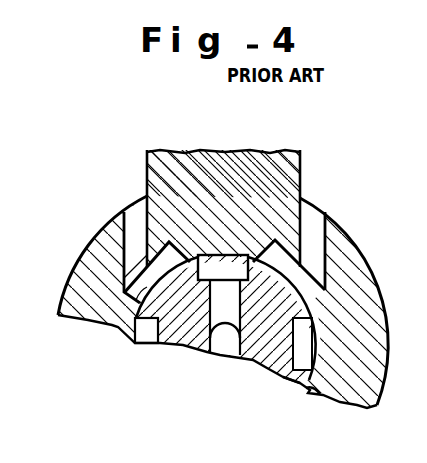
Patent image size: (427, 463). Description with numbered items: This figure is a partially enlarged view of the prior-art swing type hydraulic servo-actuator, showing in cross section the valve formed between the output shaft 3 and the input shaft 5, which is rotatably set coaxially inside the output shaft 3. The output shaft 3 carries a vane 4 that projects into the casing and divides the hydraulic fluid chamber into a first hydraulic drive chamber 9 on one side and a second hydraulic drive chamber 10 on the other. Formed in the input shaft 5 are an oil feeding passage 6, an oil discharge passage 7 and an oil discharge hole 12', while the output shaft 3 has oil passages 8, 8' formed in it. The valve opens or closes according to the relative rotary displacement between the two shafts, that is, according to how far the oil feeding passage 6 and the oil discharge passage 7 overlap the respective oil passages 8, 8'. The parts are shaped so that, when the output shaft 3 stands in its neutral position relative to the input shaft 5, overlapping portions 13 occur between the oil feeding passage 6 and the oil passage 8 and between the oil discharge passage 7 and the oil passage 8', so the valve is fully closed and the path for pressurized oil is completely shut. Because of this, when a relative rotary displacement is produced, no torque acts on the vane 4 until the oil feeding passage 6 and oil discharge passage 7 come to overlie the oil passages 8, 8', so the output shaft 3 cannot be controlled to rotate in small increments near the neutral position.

The output shaft 3 is at (95, 272).
The vane 4 is at (222, 157).
The input shaft 5 is at (183, 330).
The oil feeding passage 6 is at (303, 355).
The oil discharge passage 7 is at (228, 267).
The oil passage 8 is at (353, 251).
The oil passage 8' is at (120, 290).
The first hydraulic drive chamber 9 is at (390, 178).
The second hydraulic drive chamber 10 is at (90, 179).
The oil discharge hole 12' is at (221, 367).
The overlapping portion 13 is at (193, 257).